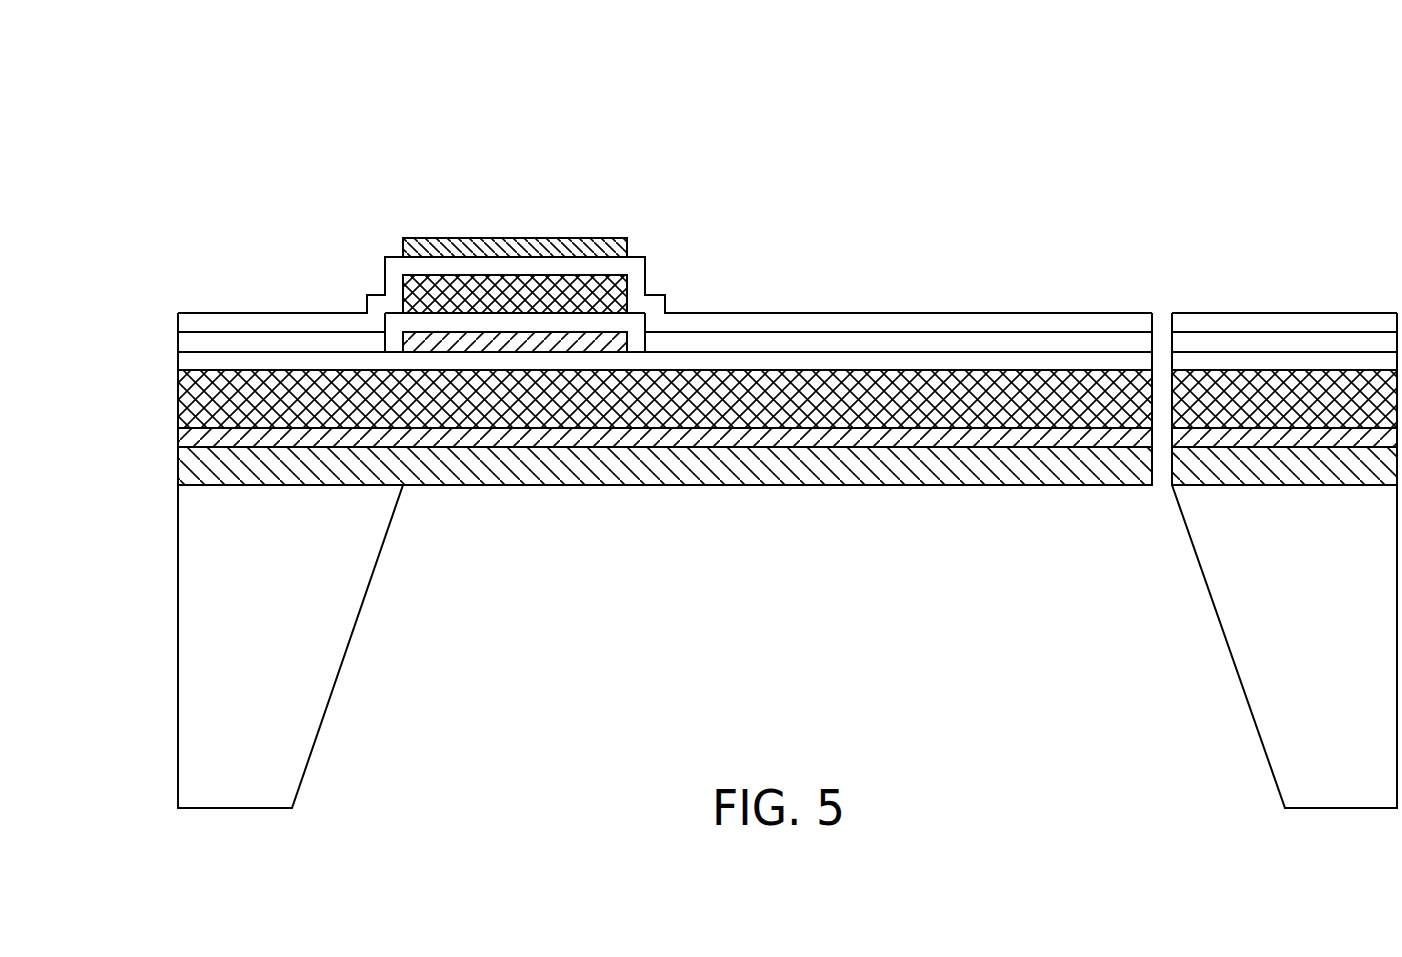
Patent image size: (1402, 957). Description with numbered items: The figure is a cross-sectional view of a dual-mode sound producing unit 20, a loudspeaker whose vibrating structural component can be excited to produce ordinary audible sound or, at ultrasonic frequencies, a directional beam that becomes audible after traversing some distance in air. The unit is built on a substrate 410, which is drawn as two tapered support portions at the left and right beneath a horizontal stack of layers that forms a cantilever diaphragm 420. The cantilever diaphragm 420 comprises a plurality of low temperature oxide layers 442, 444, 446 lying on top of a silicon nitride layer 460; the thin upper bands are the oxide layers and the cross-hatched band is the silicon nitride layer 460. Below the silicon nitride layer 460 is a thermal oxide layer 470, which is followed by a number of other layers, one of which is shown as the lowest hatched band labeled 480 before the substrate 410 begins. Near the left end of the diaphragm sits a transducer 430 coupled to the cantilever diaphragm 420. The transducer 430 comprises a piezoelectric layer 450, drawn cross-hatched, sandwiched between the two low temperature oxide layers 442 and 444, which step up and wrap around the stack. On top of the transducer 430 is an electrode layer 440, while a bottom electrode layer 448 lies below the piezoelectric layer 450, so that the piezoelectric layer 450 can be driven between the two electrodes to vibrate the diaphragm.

The dual-mode sound producing unit 20 is at (855, 157).
The substrate 410 is at (192, 597).
The cantilever diaphragm 420 is at (833, 282).
The transducer 430 is at (543, 187).
The electrode layer 440 is at (440, 238).
The low temperature oxide layer 442 is at (378, 295).
The low temperature oxide layer 444 is at (280, 340).
The low temperature oxide layer 446 is at (178, 362).
The bottom electrode layer 448 is at (627, 333).
The piezoelectric (PZT) layer 450 is at (628, 276).
The silicon nitride layer 460 is at (178, 402).
The thermal oxide layer 470 is at (178, 437).
The oxide layer 480 is at (178, 470).